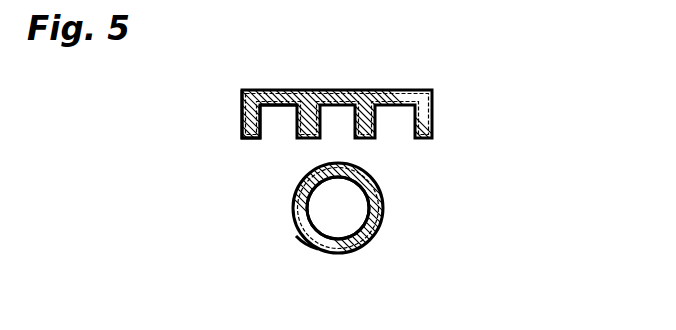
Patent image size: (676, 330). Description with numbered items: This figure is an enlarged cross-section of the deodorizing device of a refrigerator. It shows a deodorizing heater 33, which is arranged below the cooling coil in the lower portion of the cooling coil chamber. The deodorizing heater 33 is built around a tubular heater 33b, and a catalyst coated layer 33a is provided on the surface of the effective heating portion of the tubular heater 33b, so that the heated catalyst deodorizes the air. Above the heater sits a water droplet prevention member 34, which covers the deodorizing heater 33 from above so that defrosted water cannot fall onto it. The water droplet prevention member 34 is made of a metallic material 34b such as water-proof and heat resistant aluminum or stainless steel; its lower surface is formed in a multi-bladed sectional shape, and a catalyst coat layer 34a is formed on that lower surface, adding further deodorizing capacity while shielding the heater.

The water droplet prevention member 34 is at (417, 88).
The catalyst coat layer 34a is at (292, 105).
The metallic material 34b is at (243, 98).
The deodorizing heater 33 is at (385, 208).
The catalyst coated layer 33a is at (294, 214).
The tubular heater 33b is at (306, 245).